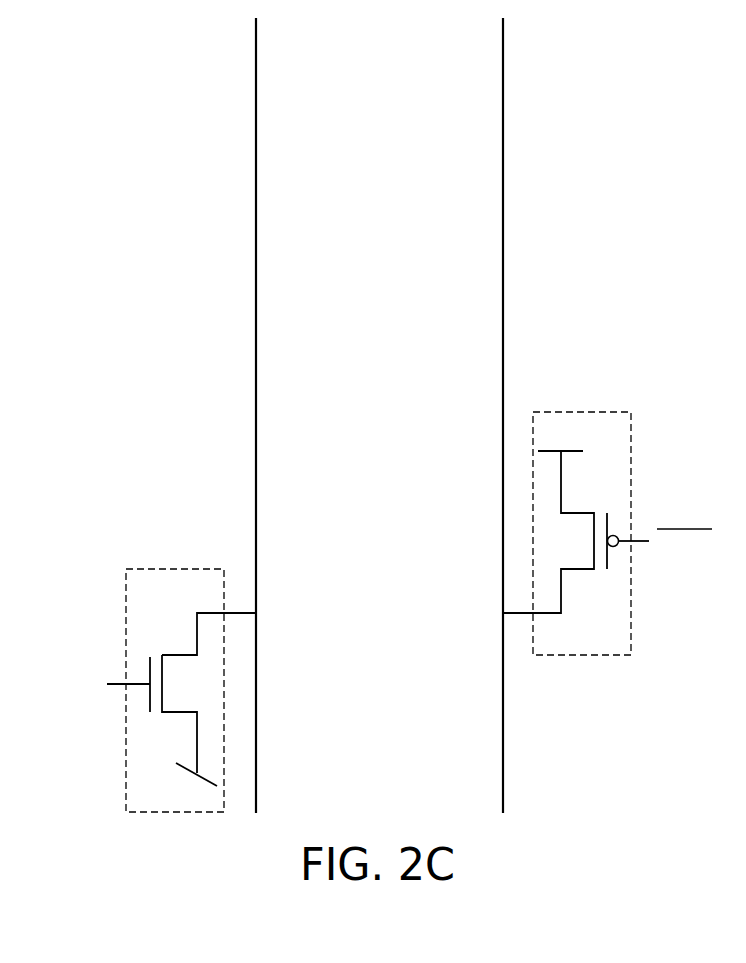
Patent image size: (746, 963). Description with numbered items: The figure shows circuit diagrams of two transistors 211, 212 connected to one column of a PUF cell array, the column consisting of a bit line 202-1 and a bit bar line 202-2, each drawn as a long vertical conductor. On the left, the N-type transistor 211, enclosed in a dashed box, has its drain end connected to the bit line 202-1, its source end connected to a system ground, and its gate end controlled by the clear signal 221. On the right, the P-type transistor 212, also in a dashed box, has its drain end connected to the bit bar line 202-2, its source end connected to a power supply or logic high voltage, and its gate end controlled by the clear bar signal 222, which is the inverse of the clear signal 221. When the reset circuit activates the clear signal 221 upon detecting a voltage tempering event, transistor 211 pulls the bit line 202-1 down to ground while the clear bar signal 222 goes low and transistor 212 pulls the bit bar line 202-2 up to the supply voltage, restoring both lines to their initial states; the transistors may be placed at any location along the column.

The bit line 202-1 is at (256, 76).
The bit bar line 202-2 is at (503, 76).
The transistor 211 is at (194, 623).
The transistor 212 is at (585, 410).
The clear signal 221 is at (70, 660).
The clear bar signal 222 is at (688, 519).